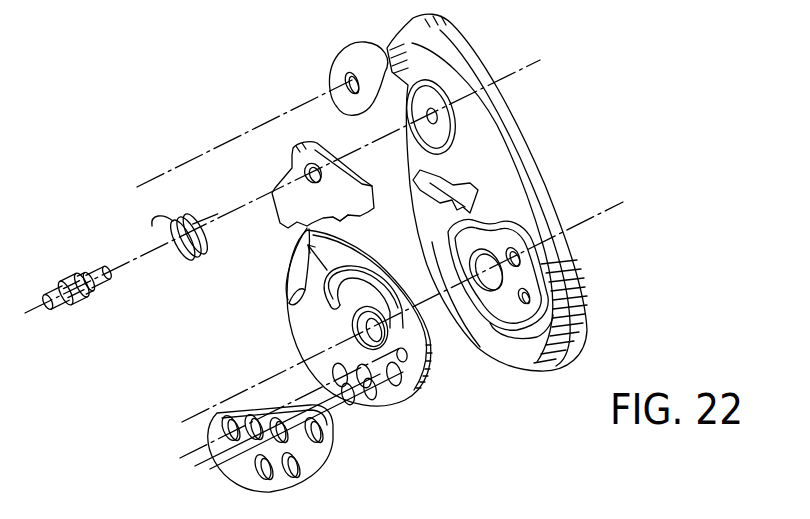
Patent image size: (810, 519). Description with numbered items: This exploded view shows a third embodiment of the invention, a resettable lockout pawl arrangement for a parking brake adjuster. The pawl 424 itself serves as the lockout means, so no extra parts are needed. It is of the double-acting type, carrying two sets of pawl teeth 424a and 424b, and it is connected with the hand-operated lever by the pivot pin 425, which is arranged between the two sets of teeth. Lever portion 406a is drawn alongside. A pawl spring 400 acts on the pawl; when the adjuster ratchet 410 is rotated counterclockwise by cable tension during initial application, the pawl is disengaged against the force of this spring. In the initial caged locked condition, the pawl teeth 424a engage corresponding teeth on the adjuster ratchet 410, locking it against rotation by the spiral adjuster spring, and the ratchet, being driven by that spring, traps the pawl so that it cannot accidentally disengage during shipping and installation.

The pivot pin 425 is at (75, 267).
The pawl spring 400 is at (183, 257).
The pawl 424 is at (277, 190).
The pawl teeth 424a is at (306, 230).
The pawl teeth 424b is at (347, 225).
The adjuster ratchet 410 is at (410, 378).
The housing 406a is at (540, 182).